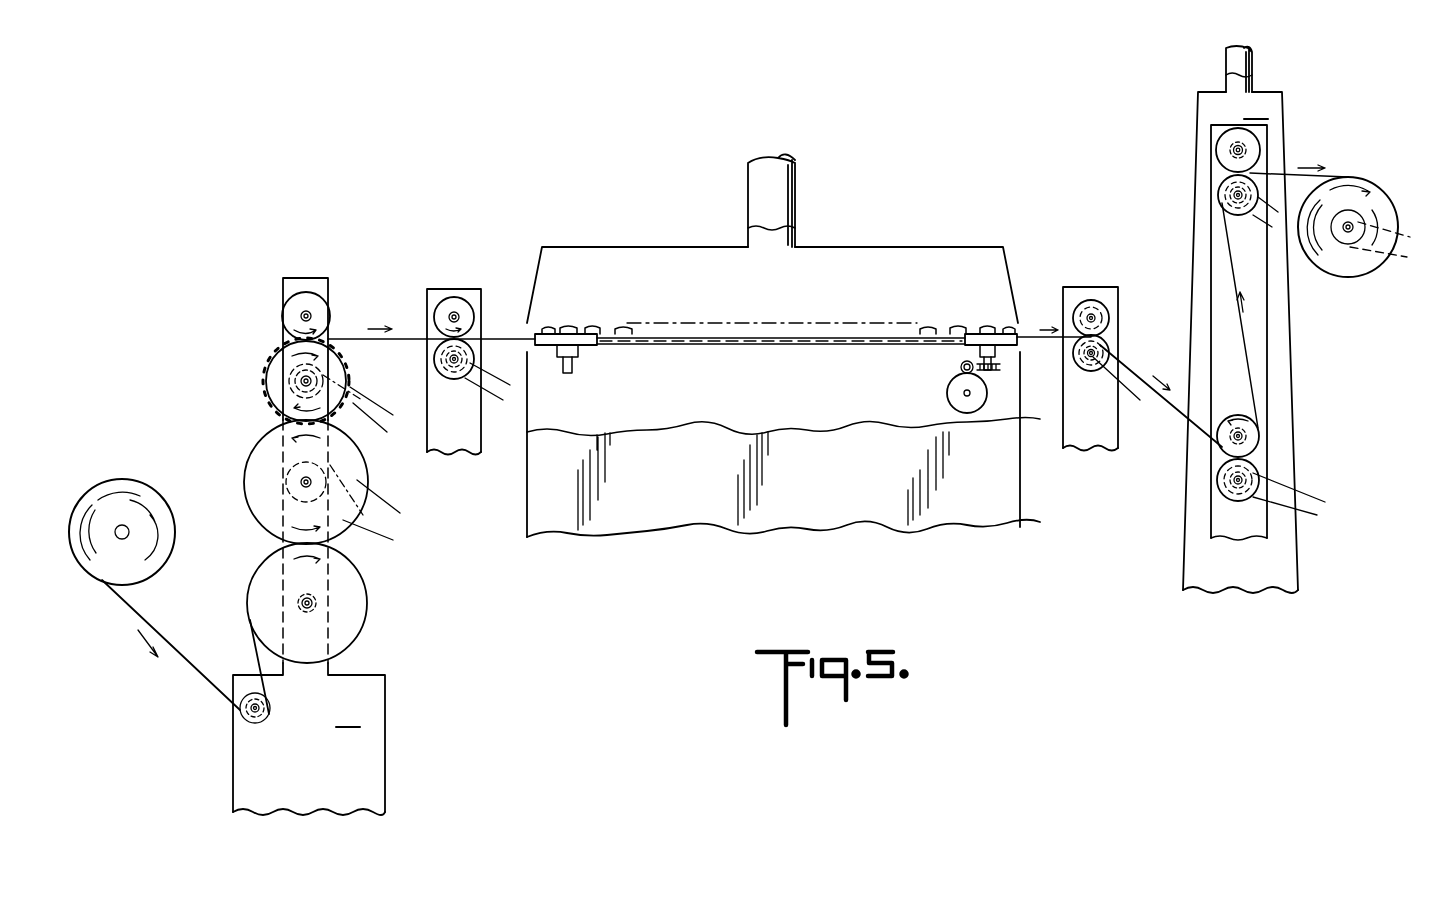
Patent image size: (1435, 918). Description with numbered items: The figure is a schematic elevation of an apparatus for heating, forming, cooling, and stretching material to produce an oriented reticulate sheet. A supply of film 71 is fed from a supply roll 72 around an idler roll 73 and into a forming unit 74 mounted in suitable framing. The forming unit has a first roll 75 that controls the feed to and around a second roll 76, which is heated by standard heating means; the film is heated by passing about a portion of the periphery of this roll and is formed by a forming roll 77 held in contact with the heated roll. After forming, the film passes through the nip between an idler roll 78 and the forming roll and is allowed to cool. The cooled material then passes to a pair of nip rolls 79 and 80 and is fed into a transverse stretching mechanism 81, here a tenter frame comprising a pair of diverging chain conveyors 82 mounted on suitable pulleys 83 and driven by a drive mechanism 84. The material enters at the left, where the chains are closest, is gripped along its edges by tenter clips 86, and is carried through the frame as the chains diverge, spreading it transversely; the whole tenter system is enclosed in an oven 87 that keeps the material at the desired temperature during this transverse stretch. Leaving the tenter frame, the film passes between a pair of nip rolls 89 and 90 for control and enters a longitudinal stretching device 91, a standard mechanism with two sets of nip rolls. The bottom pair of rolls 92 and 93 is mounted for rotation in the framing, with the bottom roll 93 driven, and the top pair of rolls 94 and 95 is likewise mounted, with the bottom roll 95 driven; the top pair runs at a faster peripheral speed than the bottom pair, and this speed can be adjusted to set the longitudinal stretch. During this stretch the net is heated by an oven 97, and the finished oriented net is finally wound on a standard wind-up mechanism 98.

The film 71 is at (173, 652).
The supply roll 72 is at (160, 519).
The idler roll 73 is at (264, 720).
The forming unit 74 is at (300, 248).
The first roll 75 is at (355, 620).
The second roll 76 is at (353, 470).
The forming roll 77 is at (335, 377).
The idler roll 78 is at (320, 305).
The nip roll 79 is at (468, 313).
The nip roll 80 is at (470, 357).
The transverse stretching mechanism 81 is at (783, 202).
The chain conveyors 82 is at (822, 343).
The pulleys 83 is at (580, 350).
The drive mechanism 84 is at (955, 400).
The tenter clips 86 is at (620, 327).
The oven 87 is at (888, 278).
The nip roll 89 is at (1100, 312).
The nip roll 90 is at (1090, 372).
The longitudinal stretching device 91 is at (1248, 60).
The roll 92 is at (1252, 445).
The bottom roll 93 is at (1222, 488).
The roll 94 is at (1255, 148).
The bottom roll 95 is at (1222, 197).
The oven 97 is at (1208, 108).
The wind-up mechanism 98 is at (1355, 258).